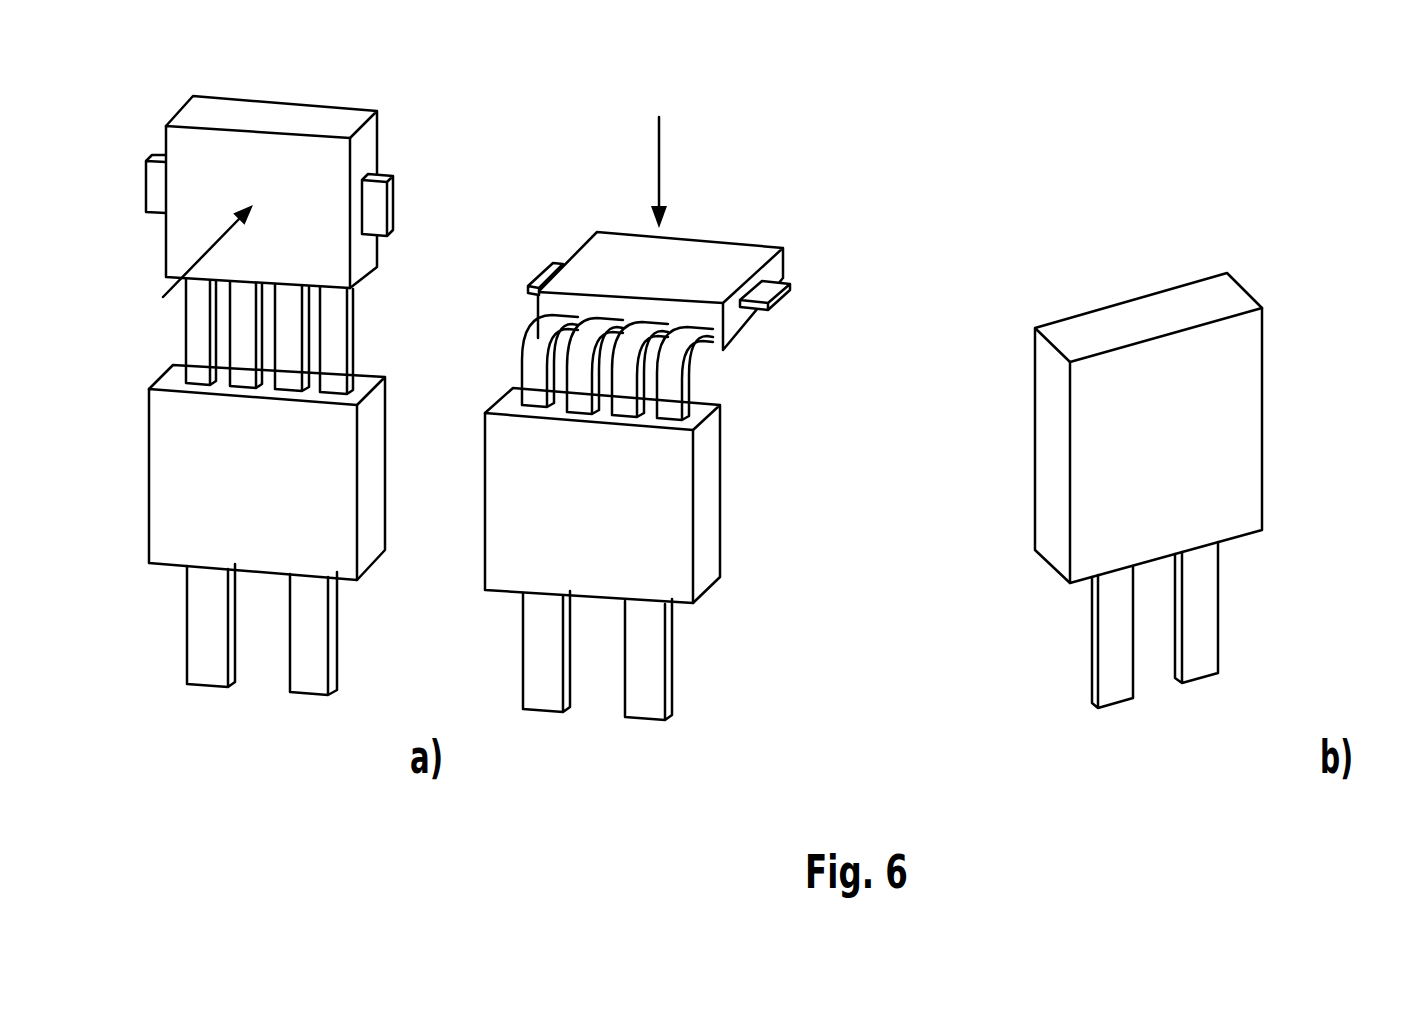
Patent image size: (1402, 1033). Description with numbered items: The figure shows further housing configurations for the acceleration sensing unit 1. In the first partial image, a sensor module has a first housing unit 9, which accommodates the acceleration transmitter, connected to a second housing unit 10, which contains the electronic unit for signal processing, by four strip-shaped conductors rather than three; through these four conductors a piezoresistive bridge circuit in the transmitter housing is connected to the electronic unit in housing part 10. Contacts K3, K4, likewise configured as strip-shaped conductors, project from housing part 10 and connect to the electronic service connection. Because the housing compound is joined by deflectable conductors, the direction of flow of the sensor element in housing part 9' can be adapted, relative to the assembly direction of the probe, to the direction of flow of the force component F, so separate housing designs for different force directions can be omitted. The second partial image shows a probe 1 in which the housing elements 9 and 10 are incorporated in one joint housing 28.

The acceleration sensing unit 1 is at (343, 97).
The first housing unit 9 is at (316, 192).
The housing part with sensor element 9' is at (671, 342).
The second housing unit 10 is at (367, 543).
The joint housing 28 is at (1230, 372).
The contact K3 is at (213, 670).
The contact K4 is at (313, 678).
The force component F is at (416, 220).